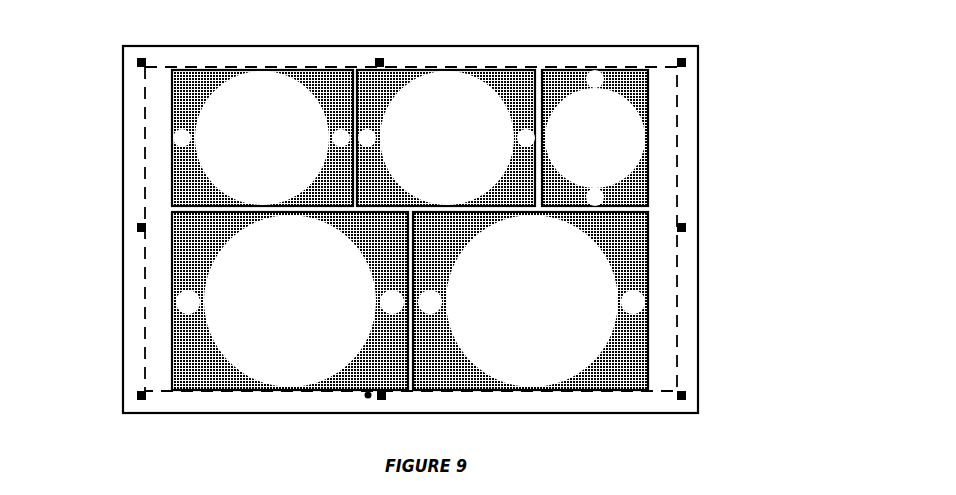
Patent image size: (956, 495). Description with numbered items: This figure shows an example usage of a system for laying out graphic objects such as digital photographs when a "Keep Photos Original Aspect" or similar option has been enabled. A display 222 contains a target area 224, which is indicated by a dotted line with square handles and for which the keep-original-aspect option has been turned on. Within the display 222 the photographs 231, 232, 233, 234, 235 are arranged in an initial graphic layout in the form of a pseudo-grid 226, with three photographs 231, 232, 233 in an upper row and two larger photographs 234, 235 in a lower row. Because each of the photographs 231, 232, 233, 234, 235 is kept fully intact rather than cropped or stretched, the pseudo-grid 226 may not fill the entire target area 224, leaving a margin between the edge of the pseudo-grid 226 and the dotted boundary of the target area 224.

The display 222 is at (122, 264).
The target area 224 is at (675, 348).
The pseudo-grid 226 is at (506, 230).
The photograph 231 is at (262, 138).
The photograph 232 is at (446, 138).
The photograph 233 is at (595, 138).
The photograph 234 is at (290, 301).
The photograph 235 is at (530, 301).